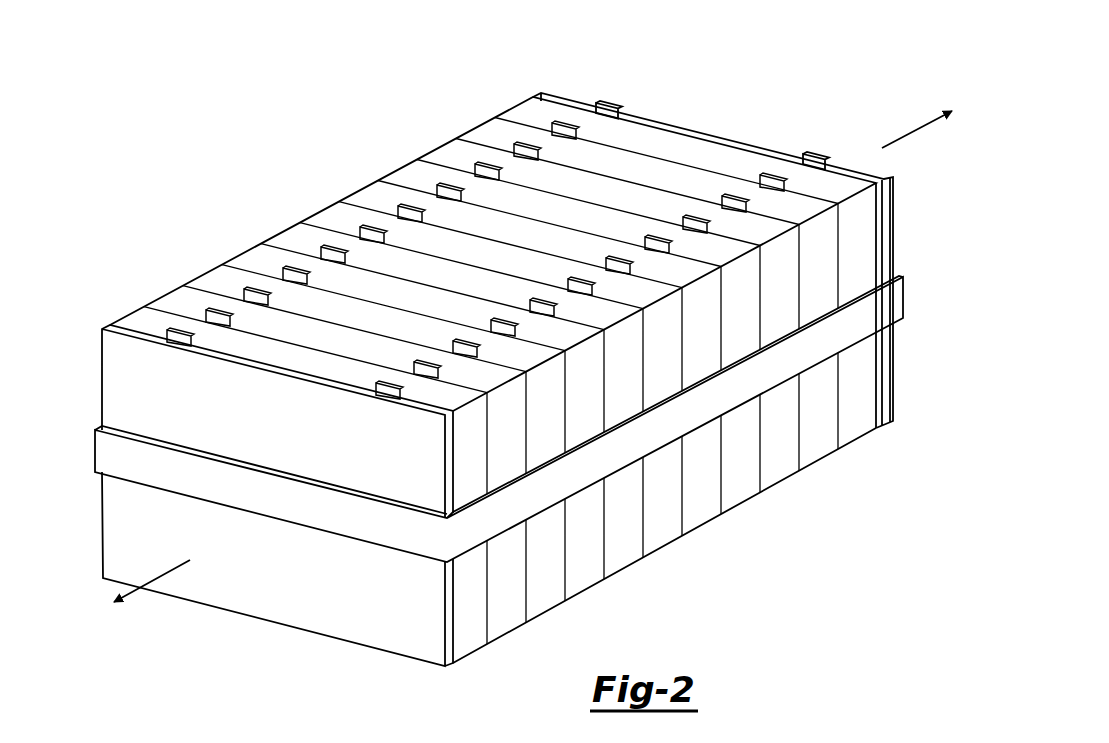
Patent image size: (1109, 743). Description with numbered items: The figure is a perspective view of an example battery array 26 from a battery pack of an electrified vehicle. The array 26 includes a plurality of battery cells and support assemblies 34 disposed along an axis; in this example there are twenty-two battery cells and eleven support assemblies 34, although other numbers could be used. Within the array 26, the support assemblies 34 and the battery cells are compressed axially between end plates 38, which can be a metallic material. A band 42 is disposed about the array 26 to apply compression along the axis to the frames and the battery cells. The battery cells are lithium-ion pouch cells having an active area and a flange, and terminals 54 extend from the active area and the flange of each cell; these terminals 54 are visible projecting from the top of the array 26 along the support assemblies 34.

The array 26 is at (790, 68).
The support assembly 34 is at (346, 216).
The end plate 38 is at (122, 372).
The band 42 is at (130, 463).
The terminal 54 is at (556, 125).